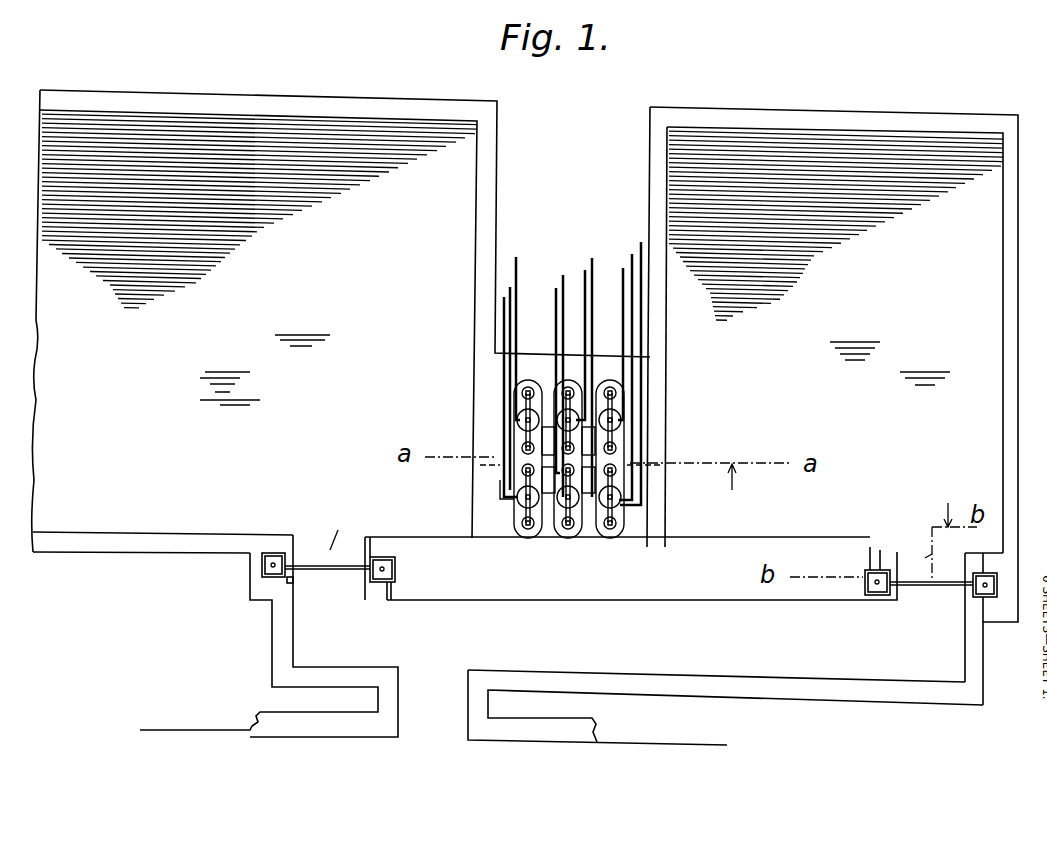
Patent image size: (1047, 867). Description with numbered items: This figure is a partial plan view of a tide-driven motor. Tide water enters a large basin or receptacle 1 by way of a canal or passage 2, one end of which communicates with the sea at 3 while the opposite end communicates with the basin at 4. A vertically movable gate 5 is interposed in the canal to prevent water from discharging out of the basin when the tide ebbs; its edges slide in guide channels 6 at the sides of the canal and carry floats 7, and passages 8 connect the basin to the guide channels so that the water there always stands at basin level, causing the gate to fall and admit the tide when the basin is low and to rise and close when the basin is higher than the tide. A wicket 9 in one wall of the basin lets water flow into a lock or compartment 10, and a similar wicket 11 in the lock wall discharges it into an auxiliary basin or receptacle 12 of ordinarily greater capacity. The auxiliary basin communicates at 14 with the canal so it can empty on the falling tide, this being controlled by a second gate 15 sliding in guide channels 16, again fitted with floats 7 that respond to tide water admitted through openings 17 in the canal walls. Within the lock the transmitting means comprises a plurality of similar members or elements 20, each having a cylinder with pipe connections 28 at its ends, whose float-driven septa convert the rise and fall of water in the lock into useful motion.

The receptacle 1 is at (832, 406).
The canal or passage 2 is at (571, 636).
The sea communication end 3 is at (438, 718).
The basin communication end 4 is at (919, 562).
The gate 5 is at (967, 588).
The guide channels 6 is at (985, 598).
The floats 7 is at (975, 594).
The passages 8 is at (983, 553).
The wicket 9 is at (645, 463).
The lock or compartment 10 is at (513, 510).
The wicket 11 is at (480, 466).
The auxiliary basin or receptacle 12 is at (341, 321).
The communication 14 is at (345, 525).
The gate 15 is at (318, 572).
The guide channels 16 is at (395, 568).
The openings 17 is at (380, 600).
The members or elements 20 is at (600, 538).
The pipe connections 28 is at (632, 264).